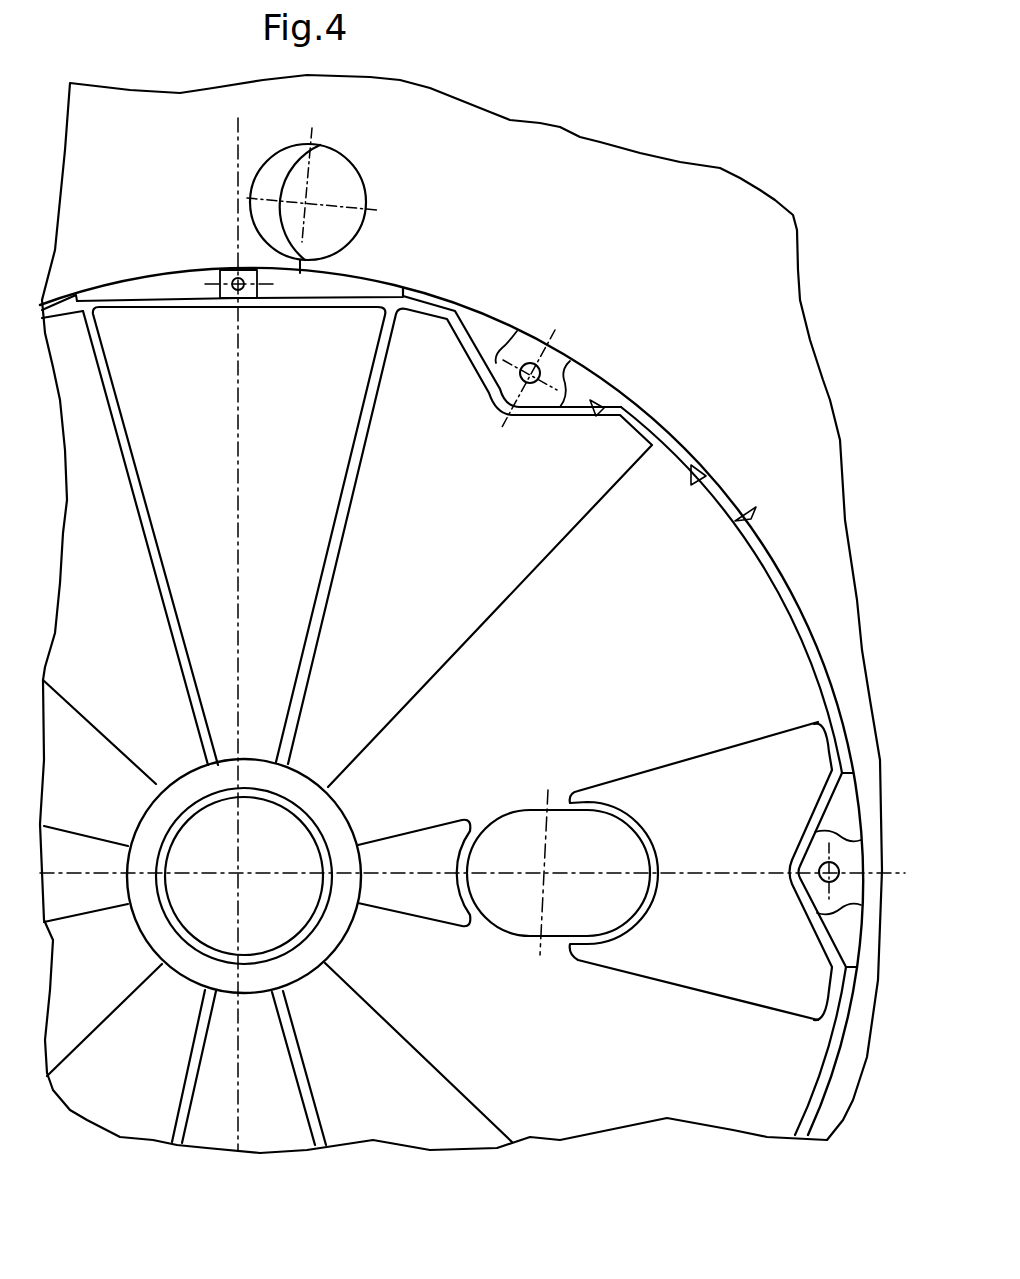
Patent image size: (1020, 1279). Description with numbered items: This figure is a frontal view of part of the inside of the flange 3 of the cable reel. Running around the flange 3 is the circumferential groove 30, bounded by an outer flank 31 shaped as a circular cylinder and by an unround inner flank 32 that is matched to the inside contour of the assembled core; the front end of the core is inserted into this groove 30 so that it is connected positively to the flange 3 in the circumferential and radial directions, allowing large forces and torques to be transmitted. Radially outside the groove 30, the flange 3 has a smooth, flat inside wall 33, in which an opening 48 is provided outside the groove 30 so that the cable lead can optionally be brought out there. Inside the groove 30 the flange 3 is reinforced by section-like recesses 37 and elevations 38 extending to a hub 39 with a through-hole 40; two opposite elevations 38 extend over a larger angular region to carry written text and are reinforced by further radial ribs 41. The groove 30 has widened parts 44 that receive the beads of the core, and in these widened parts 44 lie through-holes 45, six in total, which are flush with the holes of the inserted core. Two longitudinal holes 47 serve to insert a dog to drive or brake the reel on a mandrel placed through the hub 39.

The flange 3 is at (628, 136).
The circumferential groove 30 is at (637, 404).
The outer flank 31 is at (705, 475).
The inner flank 32 is at (597, 402).
The inside wall 33 is at (333, 248).
The section-like recesses 37 is at (618, 695).
The elevations 38 is at (400, 564).
The hub 39 is at (298, 788).
The through-hole 40 is at (256, 872).
The radial ribs 41 is at (137, 477).
The widened parts 44 is at (480, 328).
The through-holes 45 is at (536, 366).
The longitudinal holes 47 is at (610, 917).
The opening 48 is at (345, 197).